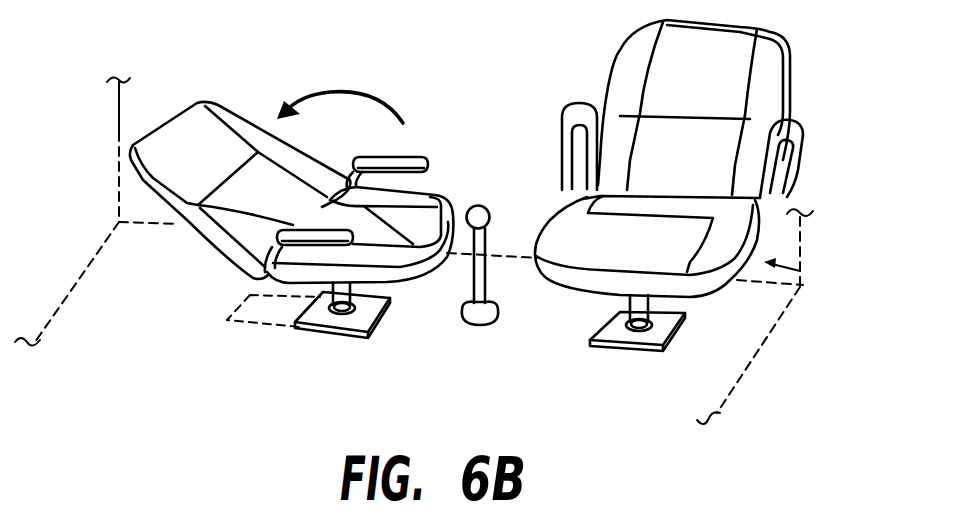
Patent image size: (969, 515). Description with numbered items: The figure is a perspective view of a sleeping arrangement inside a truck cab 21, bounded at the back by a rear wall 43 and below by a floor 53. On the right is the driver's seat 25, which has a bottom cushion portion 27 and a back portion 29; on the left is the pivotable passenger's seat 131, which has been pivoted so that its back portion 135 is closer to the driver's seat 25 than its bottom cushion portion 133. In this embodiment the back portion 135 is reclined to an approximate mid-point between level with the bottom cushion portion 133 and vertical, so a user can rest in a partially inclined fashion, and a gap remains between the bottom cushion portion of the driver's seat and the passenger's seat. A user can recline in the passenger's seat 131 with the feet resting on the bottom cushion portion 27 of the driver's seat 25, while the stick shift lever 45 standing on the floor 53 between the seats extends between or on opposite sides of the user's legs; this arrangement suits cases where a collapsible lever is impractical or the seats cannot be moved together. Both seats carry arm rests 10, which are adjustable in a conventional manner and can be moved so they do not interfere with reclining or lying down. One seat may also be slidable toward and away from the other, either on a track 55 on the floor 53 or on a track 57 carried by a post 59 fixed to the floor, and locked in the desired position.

The arm rests 10 is at (293, 229).
The cab 21 is at (803, 283).
The driver's seat 25 is at (797, 37).
The bottom cushion portion 27 is at (585, 247).
The back portion 29 is at (770, 84).
The rear wall 43 is at (778, 233).
The lever 45 is at (466, 282).
The floor 53 is at (705, 375).
The track 55 is at (240, 300).
The track 57 is at (480, 326).
The post 59 is at (343, 302).
The pivotable seat 131 is at (173, 238).
The bottom cushion portion 133 is at (423, 218).
The back portion 135 is at (150, 186).